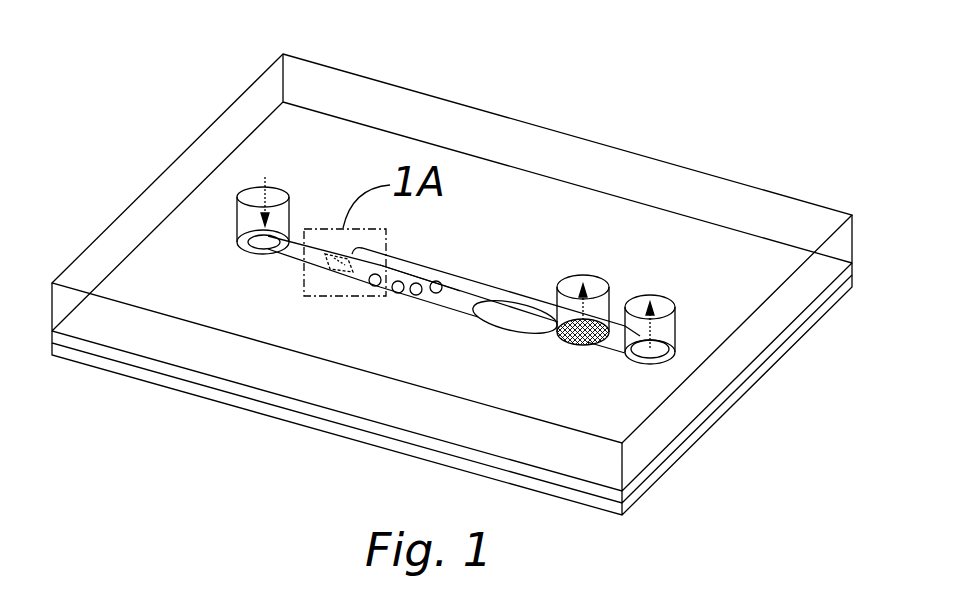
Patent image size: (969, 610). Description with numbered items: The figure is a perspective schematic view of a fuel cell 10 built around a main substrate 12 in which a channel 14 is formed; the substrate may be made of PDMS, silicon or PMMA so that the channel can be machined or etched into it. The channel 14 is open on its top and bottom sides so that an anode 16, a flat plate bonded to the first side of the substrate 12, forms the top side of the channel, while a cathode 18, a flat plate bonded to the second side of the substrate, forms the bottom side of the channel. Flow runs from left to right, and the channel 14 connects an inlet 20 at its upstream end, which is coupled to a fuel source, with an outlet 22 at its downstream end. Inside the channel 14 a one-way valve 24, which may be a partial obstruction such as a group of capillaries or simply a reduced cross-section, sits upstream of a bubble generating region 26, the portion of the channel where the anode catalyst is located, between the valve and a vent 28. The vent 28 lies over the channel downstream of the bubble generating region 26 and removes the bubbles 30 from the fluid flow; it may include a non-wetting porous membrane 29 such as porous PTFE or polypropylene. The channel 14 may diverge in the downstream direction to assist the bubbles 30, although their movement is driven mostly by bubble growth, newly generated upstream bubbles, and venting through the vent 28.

The fuel cell 10 is at (625, 77).
The main substrate 12 is at (138, 366).
The channel 14 is at (297, 252).
The anode 16 is at (348, 396).
The cathode 18 is at (235, 403).
The inlet 20 is at (238, 220).
The outlet 22 is at (677, 325).
The one-way valve 24 is at (330, 274).
The bubble generating region 26 is at (458, 291).
The vent 28 is at (585, 277).
The porous membrane 29 is at (567, 346).
The bubbles 30 is at (437, 293).